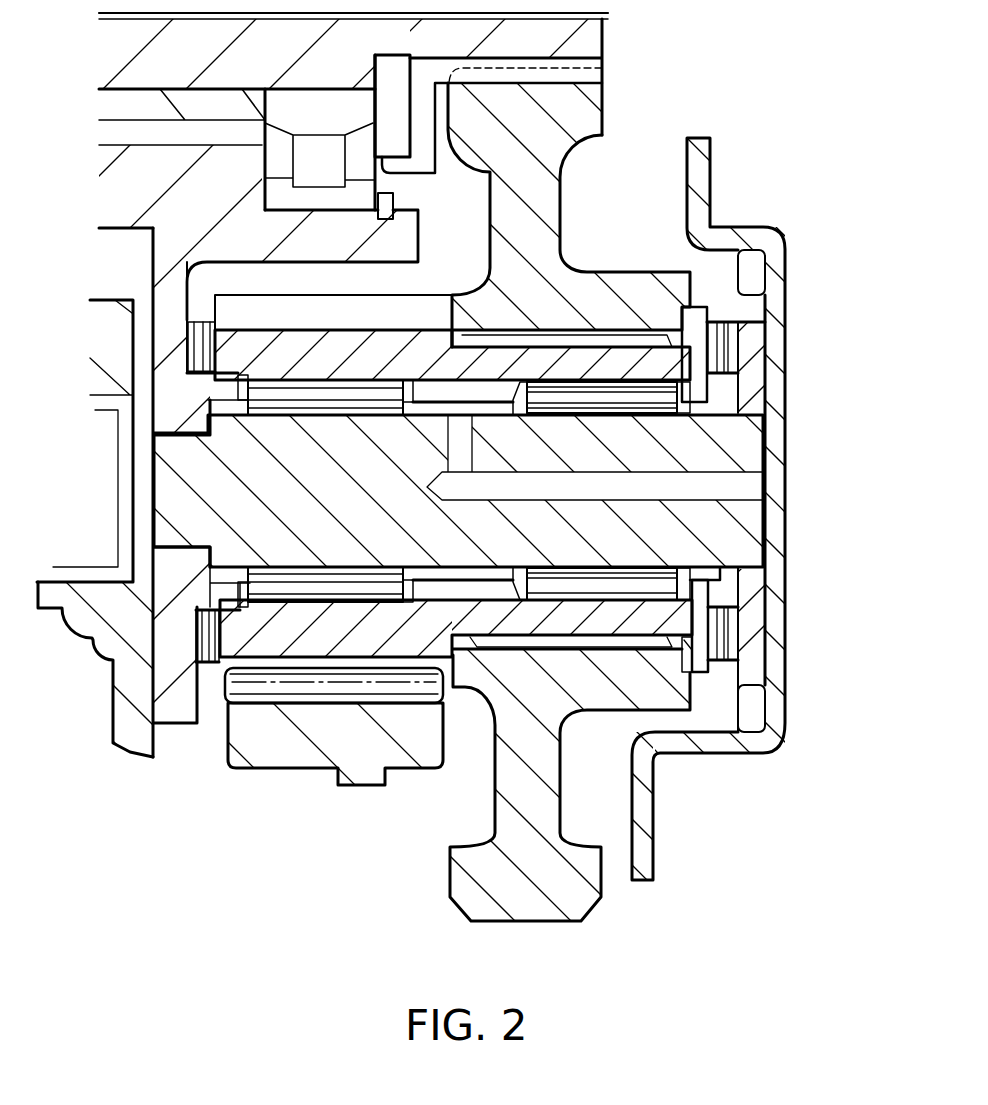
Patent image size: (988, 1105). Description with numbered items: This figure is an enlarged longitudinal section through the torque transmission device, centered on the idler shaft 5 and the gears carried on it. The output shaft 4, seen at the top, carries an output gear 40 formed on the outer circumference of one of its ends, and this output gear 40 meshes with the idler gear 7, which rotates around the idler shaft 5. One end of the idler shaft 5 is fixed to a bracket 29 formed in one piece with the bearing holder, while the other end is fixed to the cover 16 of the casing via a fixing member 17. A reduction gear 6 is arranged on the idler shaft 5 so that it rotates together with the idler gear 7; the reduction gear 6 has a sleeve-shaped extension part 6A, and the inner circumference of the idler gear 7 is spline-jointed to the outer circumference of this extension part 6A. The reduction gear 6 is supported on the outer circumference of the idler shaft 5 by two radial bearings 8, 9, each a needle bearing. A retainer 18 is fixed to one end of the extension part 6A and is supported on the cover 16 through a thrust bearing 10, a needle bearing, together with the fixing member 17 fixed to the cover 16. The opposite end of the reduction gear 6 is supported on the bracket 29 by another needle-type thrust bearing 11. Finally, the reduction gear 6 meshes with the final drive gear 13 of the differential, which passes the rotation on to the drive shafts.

The output shaft 4 is at (606, 33).
The output gear 40 is at (553, 75).
The idler gear 7 is at (560, 193).
The extension part 6A is at (628, 363).
The fixing member 17 is at (755, 368).
The idler shaft 5 is at (733, 446).
The cover 16 is at (788, 588).
The thrust bearing 10 is at (740, 624).
The retainer 18 is at (708, 667).
The radial bearing 8 is at (690, 708).
The reduction gear 6 is at (260, 640).
The final drive gear 13 is at (287, 750).
The radial bearing 9 is at (215, 548).
The thrust bearing 11 is at (193, 657).
The bracket 29 is at (190, 402).